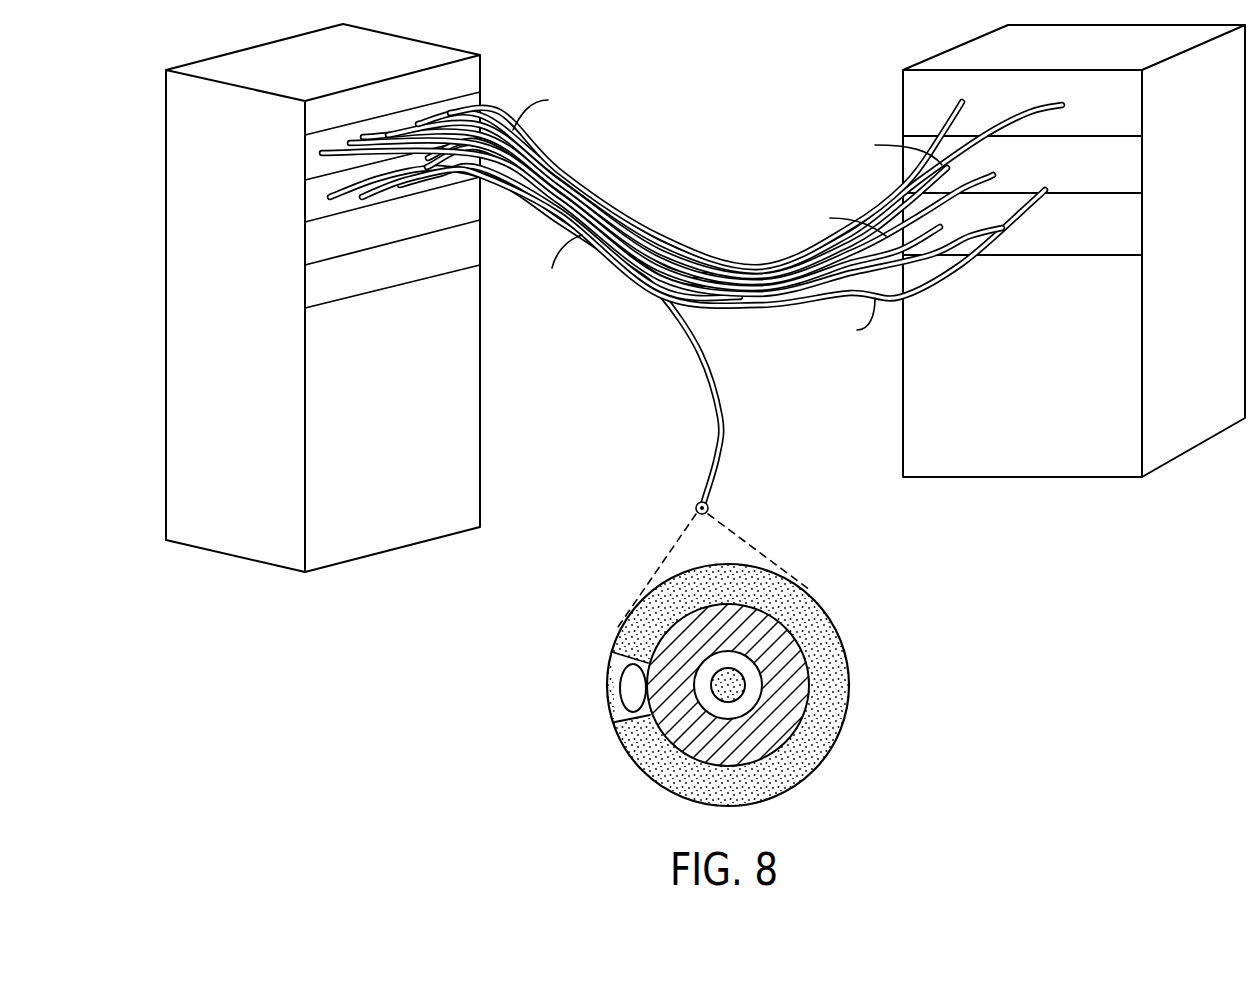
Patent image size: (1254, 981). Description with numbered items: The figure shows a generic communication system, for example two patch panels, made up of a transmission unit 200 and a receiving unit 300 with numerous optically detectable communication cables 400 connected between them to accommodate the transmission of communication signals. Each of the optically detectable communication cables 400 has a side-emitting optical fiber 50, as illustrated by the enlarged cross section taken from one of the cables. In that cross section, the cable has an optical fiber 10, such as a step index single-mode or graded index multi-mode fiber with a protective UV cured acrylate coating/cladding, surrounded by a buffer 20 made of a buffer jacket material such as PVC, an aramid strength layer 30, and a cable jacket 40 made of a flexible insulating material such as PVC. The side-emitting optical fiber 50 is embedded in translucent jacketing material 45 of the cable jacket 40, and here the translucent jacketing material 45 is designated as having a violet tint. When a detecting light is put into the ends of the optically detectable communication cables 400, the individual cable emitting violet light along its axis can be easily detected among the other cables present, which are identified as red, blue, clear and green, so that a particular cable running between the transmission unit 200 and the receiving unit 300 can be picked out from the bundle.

The optical fiber 10 is at (727, 703).
The buffer 20 is at (763, 678).
The aramid strength layer 30 is at (790, 667).
The cable jacket 40 is at (850, 702).
The translucent jacketing material 45 is at (617, 661).
The side-emitting optical fiber 50 is at (623, 697).
The transmission unit 200 is at (180, 285).
The receiving unit 300 is at (1132, 349).
The optically detectable communication cables 400 is at (628, 228).